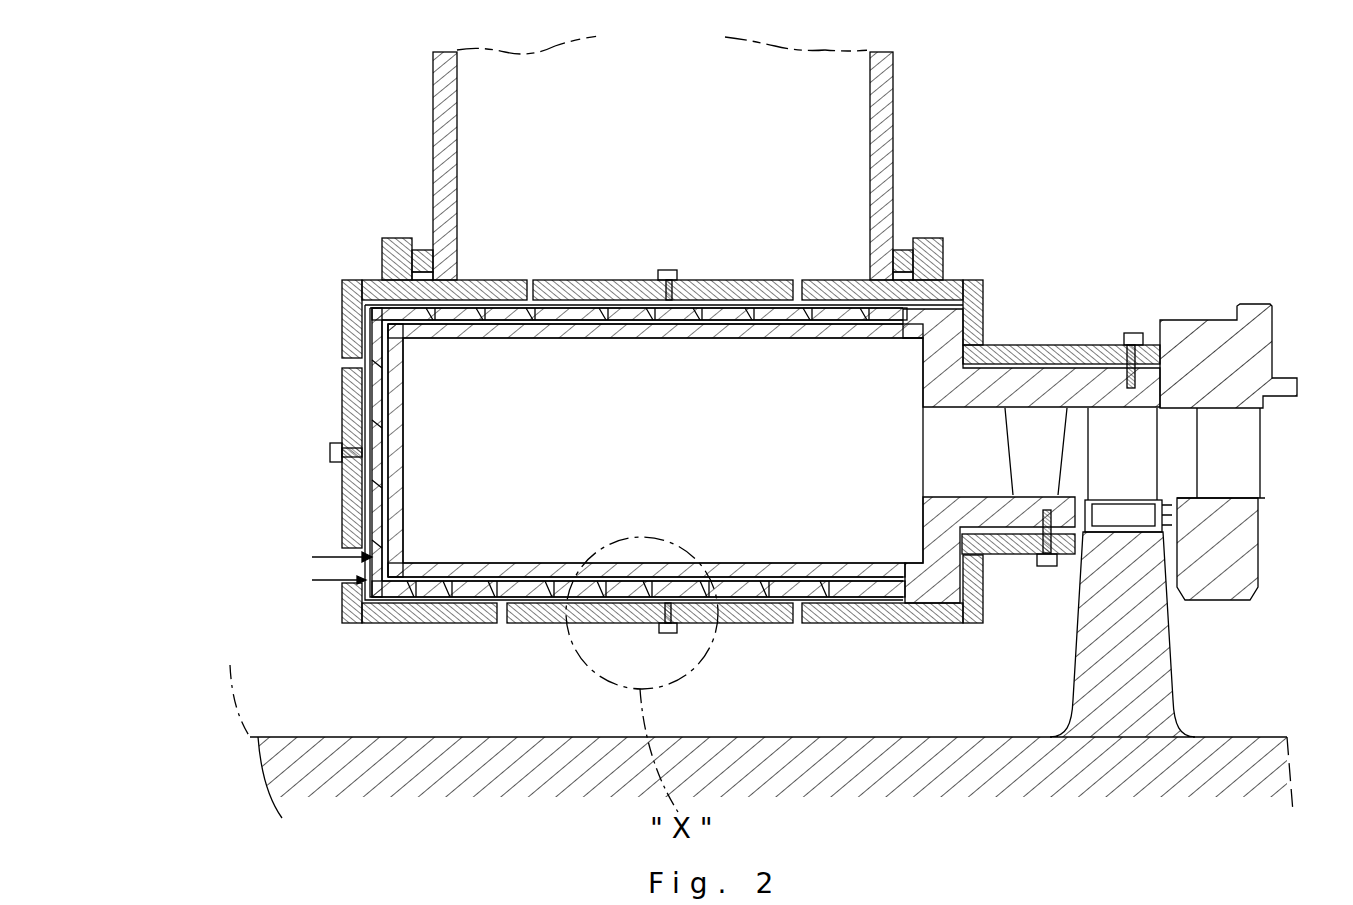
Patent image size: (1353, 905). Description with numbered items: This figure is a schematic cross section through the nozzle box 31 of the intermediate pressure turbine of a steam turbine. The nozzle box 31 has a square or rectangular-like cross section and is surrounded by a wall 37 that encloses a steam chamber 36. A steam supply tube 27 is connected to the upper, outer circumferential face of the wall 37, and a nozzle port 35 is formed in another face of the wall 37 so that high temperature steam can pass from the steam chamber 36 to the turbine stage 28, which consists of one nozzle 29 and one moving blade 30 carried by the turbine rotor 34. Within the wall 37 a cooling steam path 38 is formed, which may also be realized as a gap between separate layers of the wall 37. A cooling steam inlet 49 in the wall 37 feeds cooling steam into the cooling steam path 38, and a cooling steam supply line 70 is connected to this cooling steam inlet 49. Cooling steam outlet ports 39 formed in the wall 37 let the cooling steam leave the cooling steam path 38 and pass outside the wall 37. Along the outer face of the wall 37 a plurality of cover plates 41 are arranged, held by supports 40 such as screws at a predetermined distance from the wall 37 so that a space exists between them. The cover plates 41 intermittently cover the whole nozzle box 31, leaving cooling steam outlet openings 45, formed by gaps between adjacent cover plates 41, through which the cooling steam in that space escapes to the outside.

The steam supply tube 27 is at (433, 125).
The turbine stage 28 is at (1118, 268).
The nozzle 29 is at (1030, 440).
The moving blade 30 is at (1120, 440).
The nozzle box 31 is at (318, 296).
The turbine rotor 34 is at (848, 770).
The nozzle port 35 is at (935, 455).
The steam chamber 36 is at (656, 466).
The wall 37 is at (722, 310).
The cooling steam path 38 is at (540, 323).
The cooling steam outlet port 39 is at (745, 322).
The support 40 is at (667, 270).
The cover plate 41 is at (641, 280).
The cooling steam outlet opening 45 is at (530, 282).
The cooling steam inlet 49 is at (400, 548).
The cooling steam supply line 70 is at (326, 556).